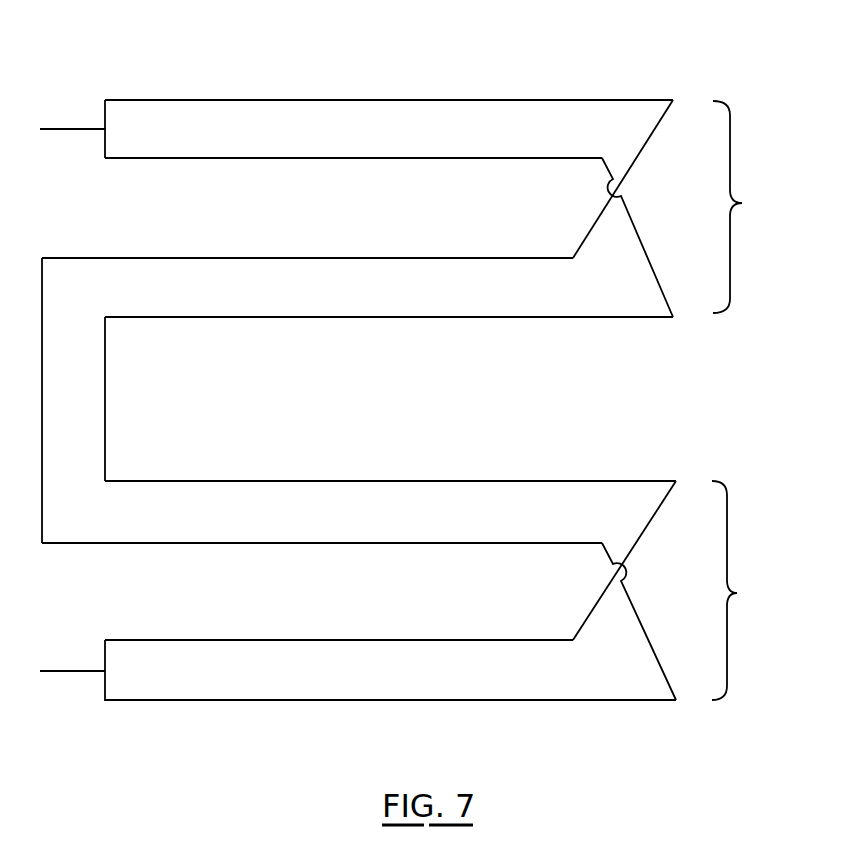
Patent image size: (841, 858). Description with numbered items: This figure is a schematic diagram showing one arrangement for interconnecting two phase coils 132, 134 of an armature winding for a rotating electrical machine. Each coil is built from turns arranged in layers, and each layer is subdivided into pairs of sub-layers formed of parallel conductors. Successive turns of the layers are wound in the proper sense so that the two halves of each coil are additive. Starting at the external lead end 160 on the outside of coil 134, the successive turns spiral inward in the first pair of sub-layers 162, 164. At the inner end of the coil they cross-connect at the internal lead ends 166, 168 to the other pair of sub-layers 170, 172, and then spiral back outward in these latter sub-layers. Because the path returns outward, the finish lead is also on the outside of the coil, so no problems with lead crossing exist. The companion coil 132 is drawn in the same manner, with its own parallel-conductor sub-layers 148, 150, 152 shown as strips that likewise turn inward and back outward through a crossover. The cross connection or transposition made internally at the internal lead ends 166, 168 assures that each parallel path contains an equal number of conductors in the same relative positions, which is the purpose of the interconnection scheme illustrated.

The phase coil 132 is at (745, 590).
The phase coil 134 is at (750, 207).
The sub-layer 148 is at (427, 640).
The sub-layer 150 is at (319, 481).
The sub-layer 152 is at (316, 543).
The external lead end 160 is at (76, 128).
The sub-layer 162 is at (235, 100).
The sub-layer 164 is at (241, 158).
The internal lead end 166 is at (646, 146).
The internal lead end 168 is at (643, 251).
The sub-layer 170 is at (393, 258).
The sub-layer 172 is at (400, 317).